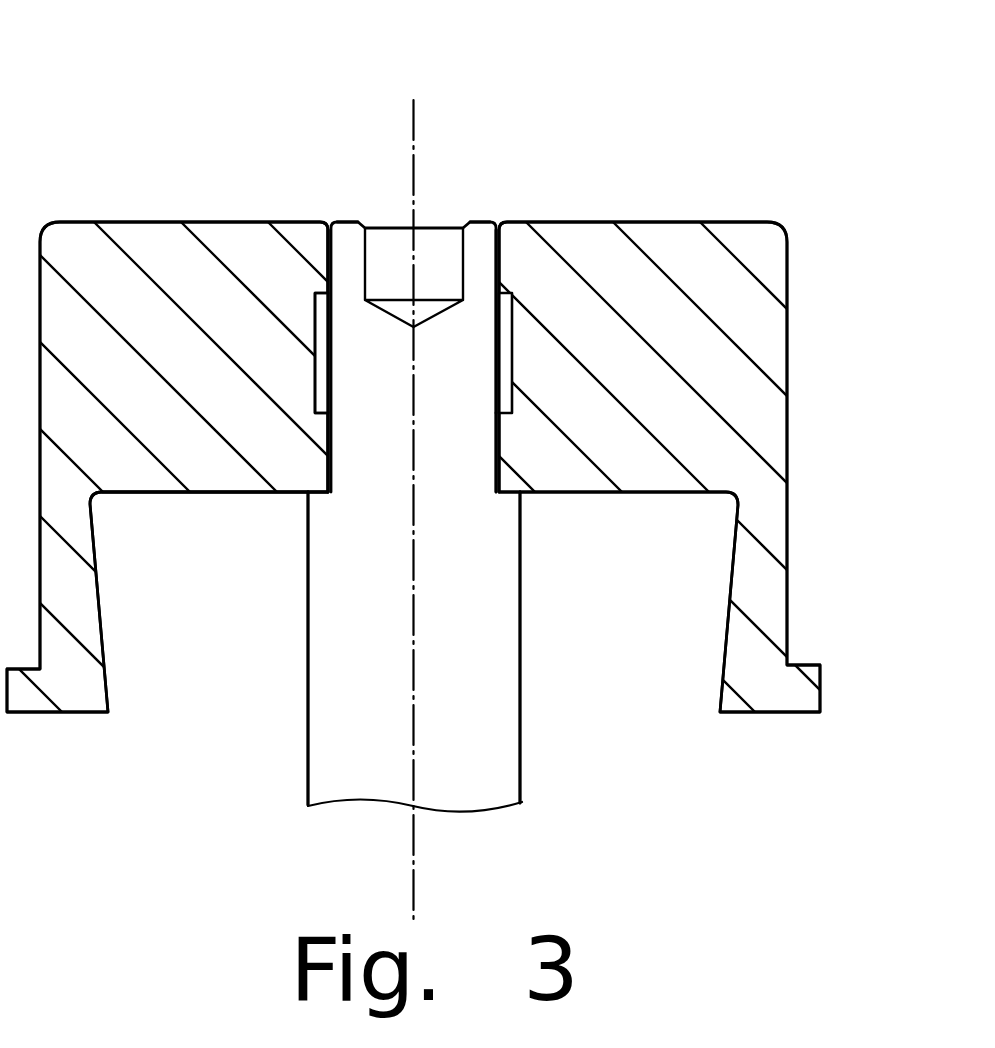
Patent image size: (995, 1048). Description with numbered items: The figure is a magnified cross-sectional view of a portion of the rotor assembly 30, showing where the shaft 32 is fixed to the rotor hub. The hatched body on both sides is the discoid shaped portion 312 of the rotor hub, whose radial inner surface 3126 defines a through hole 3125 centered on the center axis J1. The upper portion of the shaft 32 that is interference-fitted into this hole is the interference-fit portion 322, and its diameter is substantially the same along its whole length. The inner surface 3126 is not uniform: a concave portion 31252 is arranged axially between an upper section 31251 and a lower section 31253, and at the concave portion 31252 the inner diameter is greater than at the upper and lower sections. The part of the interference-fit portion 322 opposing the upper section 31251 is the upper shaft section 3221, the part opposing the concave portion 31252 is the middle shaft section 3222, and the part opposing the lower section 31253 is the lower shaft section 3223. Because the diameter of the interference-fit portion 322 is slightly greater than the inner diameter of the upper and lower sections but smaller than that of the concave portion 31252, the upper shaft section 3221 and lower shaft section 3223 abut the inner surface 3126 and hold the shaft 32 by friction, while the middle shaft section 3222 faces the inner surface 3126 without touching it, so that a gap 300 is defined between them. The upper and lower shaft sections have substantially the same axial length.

The rotor assembly 30 is at (752, 114).
The discoid shaped portion 312 is at (773, 350).
The gap 300 is at (521, 363).
The through hole 3125 is at (365, 187).
The upper section 31251 is at (308, 232).
The concave portion 31252 is at (296, 328).
The lower section 31253 is at (303, 450).
The radial inner surface 3126 is at (344, 445).
The shaft 32 is at (518, 708).
The interference-fit portion 322 is at (436, 452).
The upper shaft section 3221 is at (502, 243).
The middle shaft section 3222 is at (490, 344).
The lower shaft section 3223 is at (512, 446).
The center axis J1 is at (413, 157).